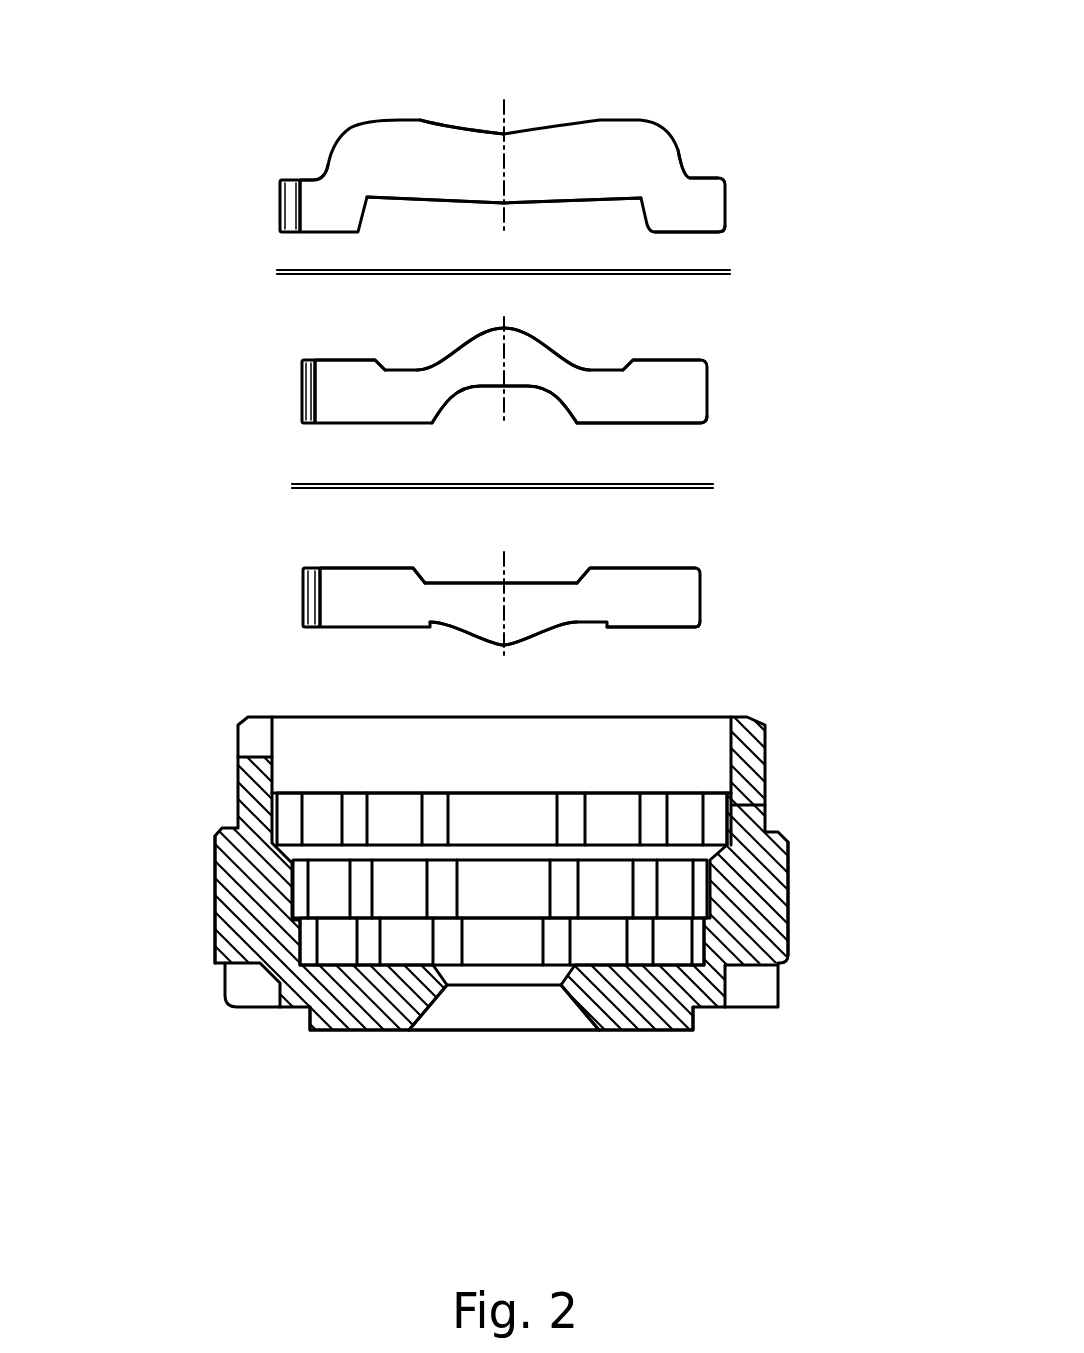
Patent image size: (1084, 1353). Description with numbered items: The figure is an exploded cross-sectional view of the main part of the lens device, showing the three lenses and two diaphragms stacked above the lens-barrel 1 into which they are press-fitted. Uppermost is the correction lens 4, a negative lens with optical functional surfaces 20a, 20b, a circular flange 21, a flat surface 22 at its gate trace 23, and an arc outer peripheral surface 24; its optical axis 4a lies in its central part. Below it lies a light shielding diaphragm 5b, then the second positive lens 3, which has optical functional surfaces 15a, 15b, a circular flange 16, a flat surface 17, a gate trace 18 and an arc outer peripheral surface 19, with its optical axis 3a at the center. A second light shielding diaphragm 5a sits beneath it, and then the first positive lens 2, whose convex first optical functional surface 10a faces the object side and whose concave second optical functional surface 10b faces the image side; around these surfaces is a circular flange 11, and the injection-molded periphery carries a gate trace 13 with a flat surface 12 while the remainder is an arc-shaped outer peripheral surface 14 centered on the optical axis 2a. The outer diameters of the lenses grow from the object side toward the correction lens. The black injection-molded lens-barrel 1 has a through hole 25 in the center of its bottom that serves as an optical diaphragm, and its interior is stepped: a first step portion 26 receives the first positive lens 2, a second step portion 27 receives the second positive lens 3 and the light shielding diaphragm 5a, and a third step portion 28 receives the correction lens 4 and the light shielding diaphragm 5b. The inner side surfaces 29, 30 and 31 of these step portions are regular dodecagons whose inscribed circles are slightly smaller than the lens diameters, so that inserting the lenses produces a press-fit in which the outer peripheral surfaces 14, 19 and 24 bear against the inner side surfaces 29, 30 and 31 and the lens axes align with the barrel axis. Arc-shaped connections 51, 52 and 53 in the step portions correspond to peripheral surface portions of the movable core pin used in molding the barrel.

The lens-barrel 1 is at (757, 753).
The first positive lens 2 is at (693, 592).
The optical axis of first positive lens 2a is at (500, 563).
The second positive lens 3 is at (697, 380).
The optical axis of second positive lens 3a is at (502, 325).
The correction lens 4 is at (703, 200).
The optical axis of correction lens 4a is at (505, 110).
The light shielding diaphragm 5a is at (700, 483).
The light shielding diaphragm 5b is at (730, 268).
The first optical functional surface 10a is at (517, 645).
The second optical functional surface 10b is at (538, 582).
The circular flange 11 is at (640, 565).
The flat surface 12 is at (305, 607).
The gate trace 13 is at (305, 587).
The outer peripheral surface 14 is at (702, 610).
The optical functional surface 15a is at (523, 388).
The optical functional surface 15b is at (523, 330).
The circular flange 16 is at (667, 357).
The flat surface 17 is at (300, 395).
The gate trace 18 is at (300, 380).
The arc outer peripheral surface 19 is at (710, 398).
The optical functional surface 20a is at (463, 204).
The optical functional surface 20b is at (451, 128).
The circular flange 21 is at (707, 182).
The flat surface 22 is at (277, 183).
The gate trace 23 is at (280, 212).
The arc outer peripheral surface 24 is at (728, 217).
The through hole 25 is at (513, 1013).
The first step portion 26 is at (710, 940).
The second step portion 27 is at (790, 900).
The third step portion 28 is at (732, 805).
The inner side surface 29 is at (672, 950).
The inner side surface 30 is at (500, 902).
The inner side surface 31 is at (495, 807).
The arc-shaped connection 51 is at (557, 947).
The arc-shaped connection 52 is at (822, 860).
The arc-shaped connection 53 is at (568, 807).